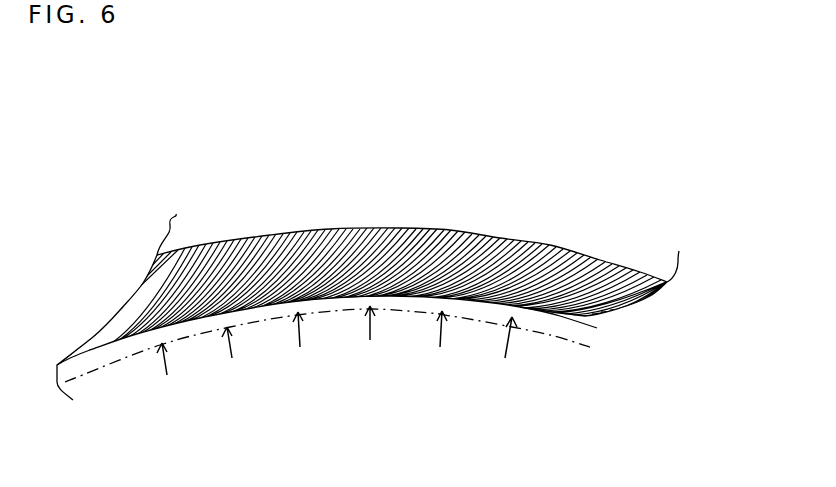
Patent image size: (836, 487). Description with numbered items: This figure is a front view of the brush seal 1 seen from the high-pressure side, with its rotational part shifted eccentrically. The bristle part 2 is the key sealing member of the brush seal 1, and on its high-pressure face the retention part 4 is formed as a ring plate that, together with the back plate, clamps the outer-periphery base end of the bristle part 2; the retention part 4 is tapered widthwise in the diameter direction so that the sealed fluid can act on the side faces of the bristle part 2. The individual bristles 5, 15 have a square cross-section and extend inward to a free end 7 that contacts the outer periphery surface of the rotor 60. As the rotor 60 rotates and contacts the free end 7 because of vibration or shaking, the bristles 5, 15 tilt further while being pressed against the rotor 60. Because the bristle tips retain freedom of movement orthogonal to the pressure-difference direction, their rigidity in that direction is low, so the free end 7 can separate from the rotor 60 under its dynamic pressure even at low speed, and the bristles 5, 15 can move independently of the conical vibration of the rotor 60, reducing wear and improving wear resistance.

The brush seal device 1 is at (363, 133).
The bristle part 2 is at (306, 227).
The retention part 4 is at (462, 211).
The bristles 5 is at (681, 298).
The square bristles 15 is at (673, 266).
The free end 7 is at (265, 303).
The rotor 60 is at (397, 421).